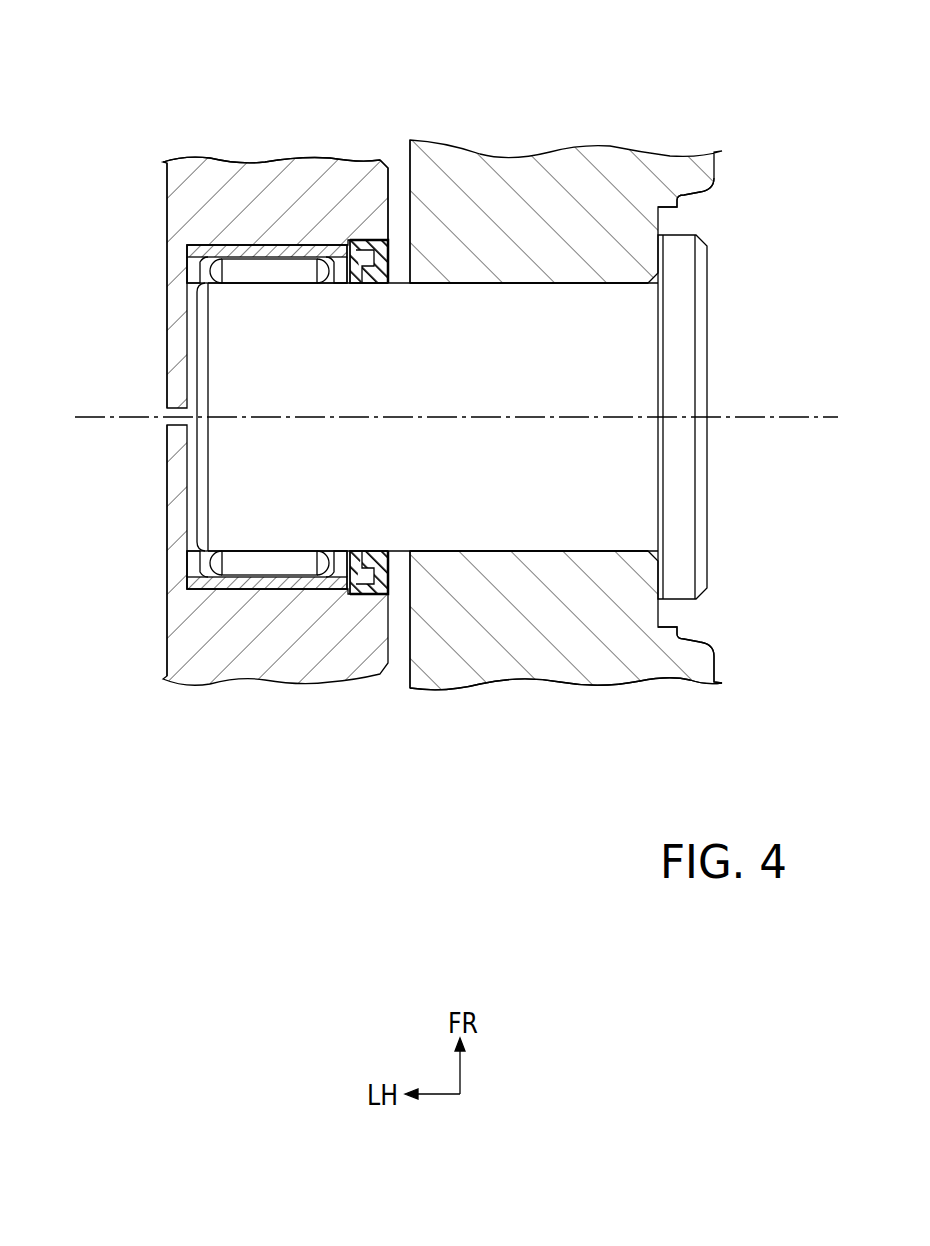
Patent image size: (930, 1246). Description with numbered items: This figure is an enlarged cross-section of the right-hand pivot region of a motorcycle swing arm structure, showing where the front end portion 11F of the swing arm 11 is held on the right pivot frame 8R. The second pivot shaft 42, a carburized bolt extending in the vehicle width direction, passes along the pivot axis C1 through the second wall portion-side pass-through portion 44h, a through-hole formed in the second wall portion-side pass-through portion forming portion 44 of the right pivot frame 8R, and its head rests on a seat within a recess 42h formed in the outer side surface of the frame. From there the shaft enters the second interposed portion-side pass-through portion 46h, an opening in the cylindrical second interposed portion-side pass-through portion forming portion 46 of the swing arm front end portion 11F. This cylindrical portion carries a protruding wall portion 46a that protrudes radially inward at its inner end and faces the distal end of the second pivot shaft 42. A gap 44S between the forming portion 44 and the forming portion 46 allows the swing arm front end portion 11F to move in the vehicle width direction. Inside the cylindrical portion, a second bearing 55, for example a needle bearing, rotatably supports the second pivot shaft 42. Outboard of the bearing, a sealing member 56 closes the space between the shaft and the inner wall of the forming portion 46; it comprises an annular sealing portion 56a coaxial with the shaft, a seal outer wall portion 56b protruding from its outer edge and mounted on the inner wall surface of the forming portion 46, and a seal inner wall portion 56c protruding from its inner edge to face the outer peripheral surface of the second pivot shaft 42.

The front end portion of the swing arm 11F is at (389, 152).
The swing arm 11 is at (271, 160).
The second interposed portion-side pass-through portion forming portion 46 is at (333, 190).
The protruding wall portion 46a is at (167, 350).
The second interposed portion-side pass-through portion 46h is at (246, 263).
The second wall portion-side pass-through portion forming portion 44 is at (630, 258).
The gap 44S is at (406, 210).
The second wall portion-side pass-through portion 44h is at (593, 283).
The second pivot shaft 42 is at (716, 332).
The recess 42h is at (706, 188).
The right pivot frame 8R is at (714, 663).
The pivot axis C1 is at (792, 418).
The second bearing 55 is at (271, 602).
The sealing member 56 is at (512, 857).
The annular sealing portion 56a is at (393, 578).
The seal outer wall portion 56b is at (367, 598).
The seal inner wall portion 56c is at (347, 596).